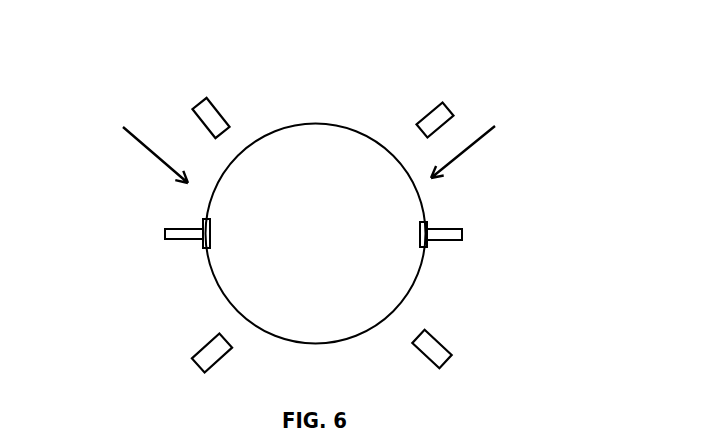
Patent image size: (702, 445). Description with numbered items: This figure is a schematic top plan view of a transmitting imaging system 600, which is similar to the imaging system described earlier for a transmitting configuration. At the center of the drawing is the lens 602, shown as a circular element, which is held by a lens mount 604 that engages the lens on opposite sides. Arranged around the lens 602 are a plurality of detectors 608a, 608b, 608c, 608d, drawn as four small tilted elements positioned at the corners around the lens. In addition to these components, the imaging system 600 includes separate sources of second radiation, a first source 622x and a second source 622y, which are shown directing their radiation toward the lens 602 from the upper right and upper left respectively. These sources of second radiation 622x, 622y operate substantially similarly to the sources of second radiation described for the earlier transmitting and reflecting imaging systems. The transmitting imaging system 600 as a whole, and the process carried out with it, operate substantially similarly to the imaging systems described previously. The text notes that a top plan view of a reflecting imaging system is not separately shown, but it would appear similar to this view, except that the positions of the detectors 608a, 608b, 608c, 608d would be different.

The transmitting imaging system 600 is at (254, 86).
The lens 602 is at (335, 248).
The lens mount 604 is at (451, 226).
The detector 608a is at (205, 109).
The detector 608b is at (450, 107).
The detector 608c is at (439, 356).
The detector 608d is at (204, 360).
The source of second radiation 622x is at (568, 138).
The source of second radiation 622y is at (107, 138).